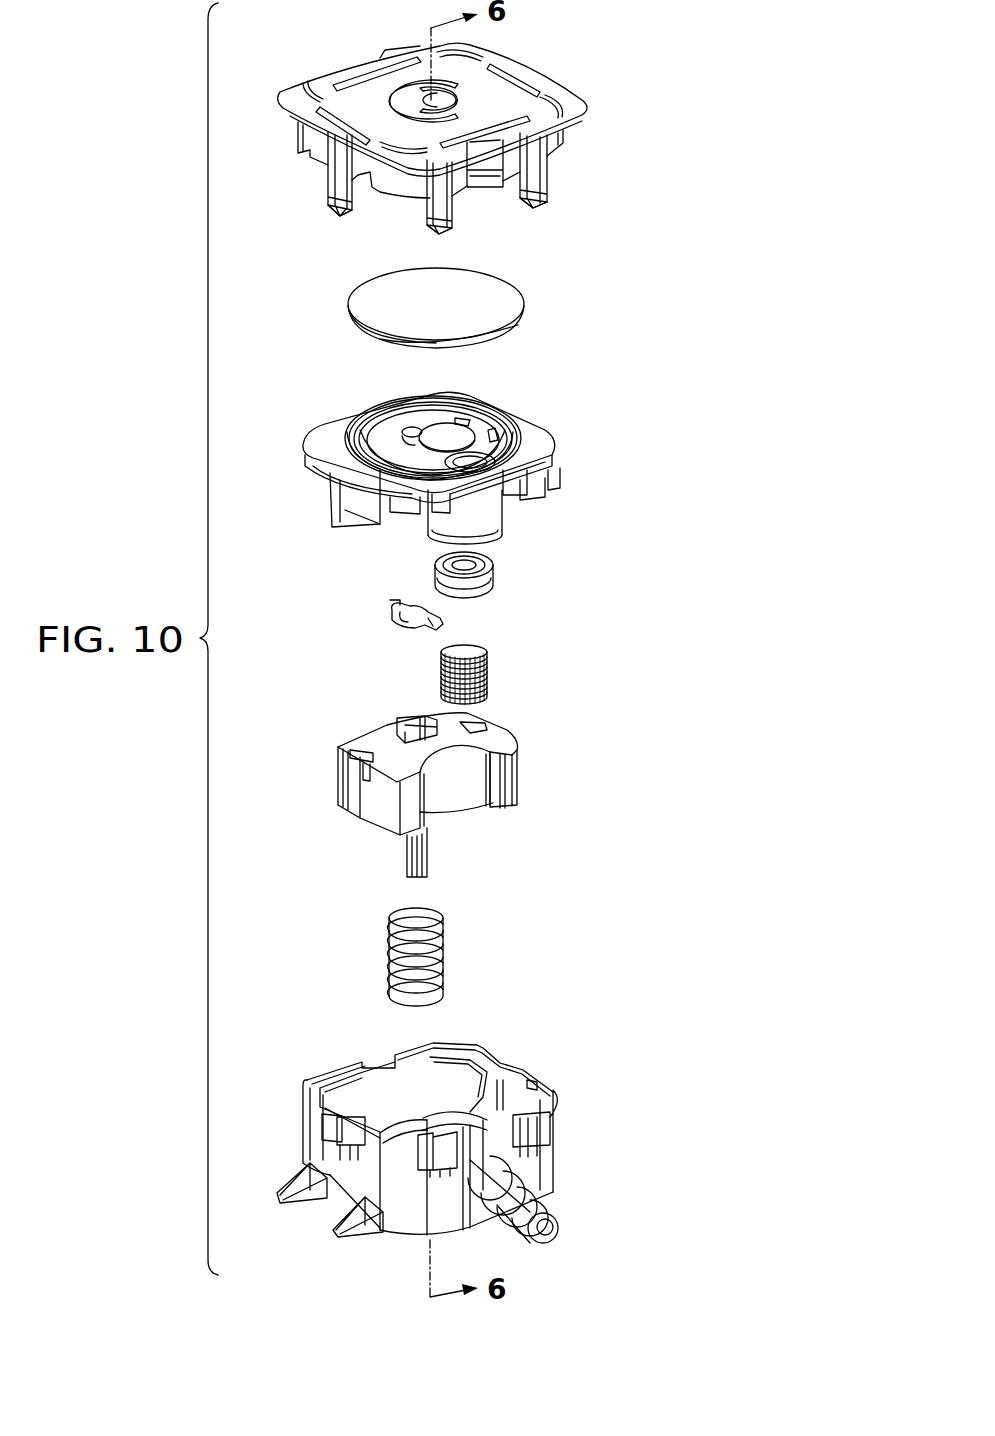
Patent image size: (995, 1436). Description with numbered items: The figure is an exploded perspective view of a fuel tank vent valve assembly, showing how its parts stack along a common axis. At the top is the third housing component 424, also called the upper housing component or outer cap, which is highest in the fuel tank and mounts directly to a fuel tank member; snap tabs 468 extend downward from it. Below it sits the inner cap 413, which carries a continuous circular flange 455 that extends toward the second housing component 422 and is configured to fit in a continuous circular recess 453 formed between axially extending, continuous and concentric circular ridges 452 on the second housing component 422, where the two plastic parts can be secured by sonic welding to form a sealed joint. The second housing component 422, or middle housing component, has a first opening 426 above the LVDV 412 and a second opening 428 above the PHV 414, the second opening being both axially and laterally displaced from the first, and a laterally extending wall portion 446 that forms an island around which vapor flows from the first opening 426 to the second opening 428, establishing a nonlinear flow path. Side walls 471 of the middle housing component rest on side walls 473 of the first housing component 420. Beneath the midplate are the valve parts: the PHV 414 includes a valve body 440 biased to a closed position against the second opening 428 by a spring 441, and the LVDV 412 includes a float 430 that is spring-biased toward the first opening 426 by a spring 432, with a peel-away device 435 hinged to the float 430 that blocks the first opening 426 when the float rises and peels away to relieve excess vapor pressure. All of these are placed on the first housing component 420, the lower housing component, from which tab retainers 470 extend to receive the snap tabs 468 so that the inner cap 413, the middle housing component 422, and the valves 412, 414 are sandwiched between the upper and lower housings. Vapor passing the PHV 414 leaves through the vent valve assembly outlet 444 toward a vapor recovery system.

The LVDV 412 is at (337, 857).
The inner cap 413 is at (502, 300).
The PHV 414 is at (552, 598).
The first housing component 420 is at (565, 1160).
The second housing component 422 is at (357, 498).
The third housing component 424 is at (337, 156).
The first opening 426 is at (480, 447).
The second opening 428 is at (403, 418).
The float 430 is at (445, 782).
The spring 432 is at (443, 962).
The peel-away device 435 is at (388, 620).
The valve body 440 is at (493, 560).
The spring 441 is at (488, 675).
The vent valve assembly outlet 444 is at (555, 1228).
The wall portion 446 is at (430, 428).
The circular ridges 452 is at (360, 416).
The circular recess 453 is at (503, 413).
The circular flange 455 is at (508, 333).
The snap tabs 468 is at (553, 197).
The tab retainers 470 is at (337, 1137).
The side walls 471 is at (368, 515).
The side walls 473 is at (368, 1107).